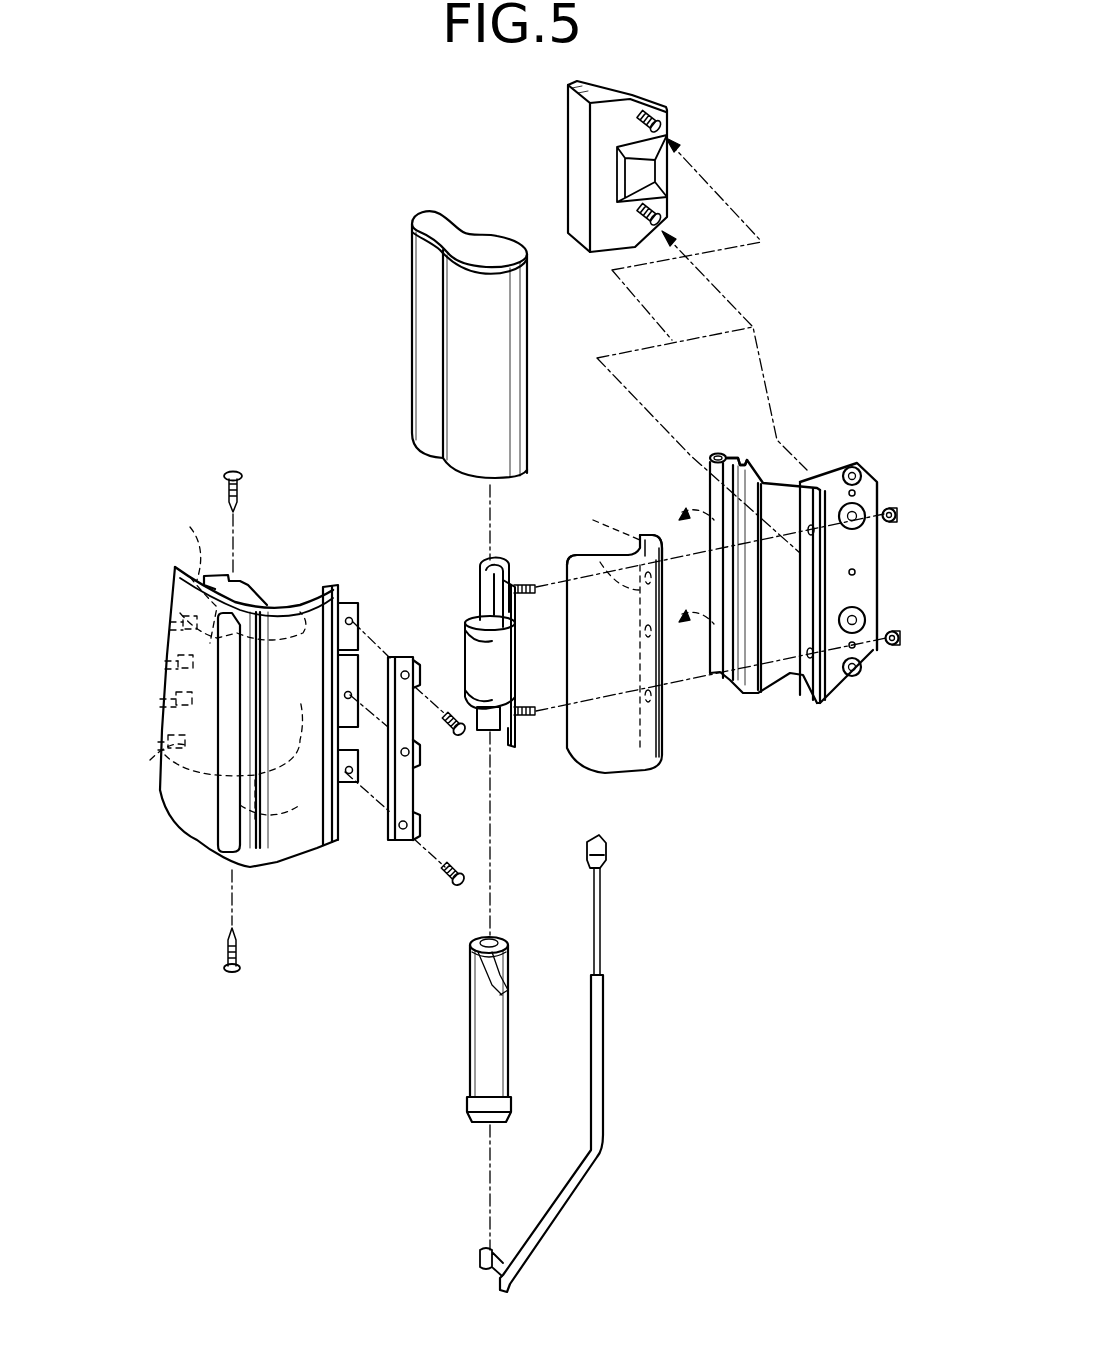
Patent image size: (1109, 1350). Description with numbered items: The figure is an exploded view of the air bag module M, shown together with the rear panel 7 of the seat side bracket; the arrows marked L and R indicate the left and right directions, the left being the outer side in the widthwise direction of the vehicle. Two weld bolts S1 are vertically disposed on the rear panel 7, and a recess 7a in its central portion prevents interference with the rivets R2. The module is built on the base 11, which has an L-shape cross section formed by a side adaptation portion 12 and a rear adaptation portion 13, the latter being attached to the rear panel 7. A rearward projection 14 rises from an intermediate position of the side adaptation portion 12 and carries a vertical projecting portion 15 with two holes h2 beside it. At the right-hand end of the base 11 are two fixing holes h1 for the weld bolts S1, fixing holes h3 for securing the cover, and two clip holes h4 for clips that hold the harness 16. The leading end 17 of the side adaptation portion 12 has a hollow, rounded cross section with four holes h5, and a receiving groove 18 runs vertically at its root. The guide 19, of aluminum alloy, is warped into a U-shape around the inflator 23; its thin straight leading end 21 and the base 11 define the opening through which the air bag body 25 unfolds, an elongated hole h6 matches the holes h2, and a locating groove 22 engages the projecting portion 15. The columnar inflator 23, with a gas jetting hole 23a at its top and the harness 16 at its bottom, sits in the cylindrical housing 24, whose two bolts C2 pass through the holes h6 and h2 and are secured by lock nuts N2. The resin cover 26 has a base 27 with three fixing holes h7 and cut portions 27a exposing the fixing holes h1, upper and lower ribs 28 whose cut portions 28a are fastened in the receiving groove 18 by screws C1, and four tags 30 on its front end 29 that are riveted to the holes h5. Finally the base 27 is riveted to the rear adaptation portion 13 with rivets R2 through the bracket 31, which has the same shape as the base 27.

The rear panel 7 is at (652, 103).
The recess 7a is at (645, 165).
The weld bolts S1 is at (662, 122).
The base 11 is at (812, 532).
The side adaptation portion 12 is at (803, 482).
The rear adaptation portion 13 is at (852, 464).
The rearward projection 14 is at (822, 702).
The projecting portion 15 is at (797, 620).
The harness 16 is at (605, 1067).
The leading end 17 is at (712, 456).
The receiving groove 18 is at (738, 460).
The guide 19 is at (625, 530).
The leading end of the guide 21 is at (582, 656).
The locating groove 22 is at (650, 533).
The inflator 23 is at (463, 1037).
The gas jetting hole 23a is at (500, 962).
The housing 24 is at (464, 582).
The air bag body 25 is at (406, 357).
The cover 26 is at (170, 822).
The base of the cover 27 is at (345, 603).
The cut portions 27a is at (352, 640).
The rib 28 is at (258, 595).
The cut portion 28a is at (245, 578).
The front end 29 is at (176, 573).
The tags 30 is at (120, 765).
The bracket 31 is at (405, 845).
The fixing holes h1 is at (868, 522).
The holes h2 is at (810, 525).
The fixing holes h3 is at (855, 491).
The clip holes h4 is at (855, 467).
The holes h5 is at (691, 550).
The elongated hole h6 is at (705, 692).
The fixing holes h7 is at (353, 618).
The lock nuts N2 is at (896, 508).
The screws C1 is at (233, 470).
The bolts C2 is at (536, 583).
The rivets R2 is at (466, 742).
The air bag module M is at (298, 983).
The left direction L is at (385, 172).
The right direction R is at (393, 161).